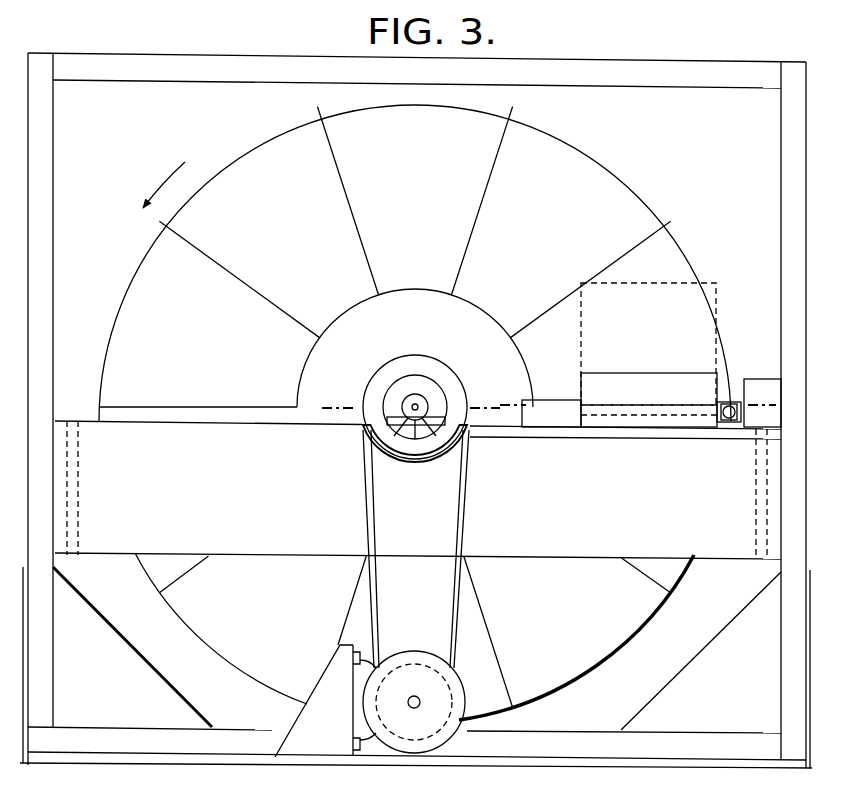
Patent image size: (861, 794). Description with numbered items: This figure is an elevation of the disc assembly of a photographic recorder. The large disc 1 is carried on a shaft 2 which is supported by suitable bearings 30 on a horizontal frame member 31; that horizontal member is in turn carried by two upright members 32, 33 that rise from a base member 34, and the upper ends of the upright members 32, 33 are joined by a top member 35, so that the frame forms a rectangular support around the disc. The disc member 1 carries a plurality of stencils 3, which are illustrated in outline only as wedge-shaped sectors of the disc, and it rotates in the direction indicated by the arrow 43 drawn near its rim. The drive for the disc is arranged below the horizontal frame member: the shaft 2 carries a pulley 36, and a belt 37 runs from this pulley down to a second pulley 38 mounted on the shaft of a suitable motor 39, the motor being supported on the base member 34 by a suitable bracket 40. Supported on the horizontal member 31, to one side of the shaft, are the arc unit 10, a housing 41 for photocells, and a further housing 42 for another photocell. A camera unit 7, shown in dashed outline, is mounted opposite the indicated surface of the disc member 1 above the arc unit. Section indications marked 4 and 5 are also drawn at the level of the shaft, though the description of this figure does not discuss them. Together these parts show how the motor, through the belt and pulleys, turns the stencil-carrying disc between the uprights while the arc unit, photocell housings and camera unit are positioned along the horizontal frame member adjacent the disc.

The disc 1 is at (614, 173).
The shaft 2 is at (420, 404).
The stencils 3 is at (199, 344).
The section line 4- 4 is at (516, 401).
The section line 5- 5 is at (341, 404).
The camera unit 7 is at (717, 289).
The arc unit 10 is at (674, 400).
The bearings 30 is at (409, 395).
The horizontal frame member 31 is at (317, 545).
The upright member 32 is at (47, 150).
The upright member 33 is at (784, 193).
The base member 34 is at (120, 737).
The member 35 is at (599, 65).
The pulley 36 is at (375, 430).
The belt 37 is at (467, 503).
The pulley 38 is at (414, 675).
The motor 39 is at (447, 730).
The bracket 40 is at (312, 722).
The housing 41 is at (560, 420).
The housing 42 is at (754, 420).
The arrow 43 is at (173, 173).